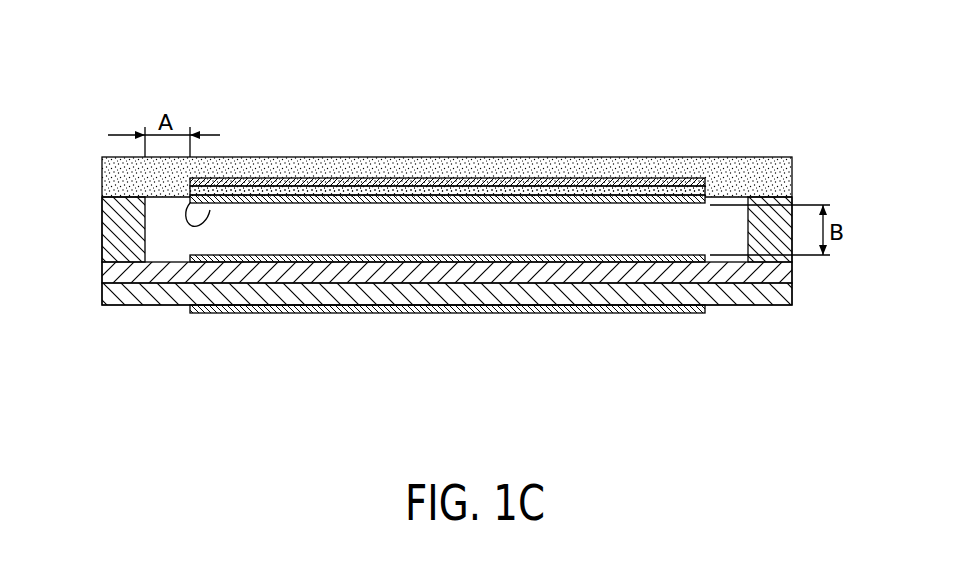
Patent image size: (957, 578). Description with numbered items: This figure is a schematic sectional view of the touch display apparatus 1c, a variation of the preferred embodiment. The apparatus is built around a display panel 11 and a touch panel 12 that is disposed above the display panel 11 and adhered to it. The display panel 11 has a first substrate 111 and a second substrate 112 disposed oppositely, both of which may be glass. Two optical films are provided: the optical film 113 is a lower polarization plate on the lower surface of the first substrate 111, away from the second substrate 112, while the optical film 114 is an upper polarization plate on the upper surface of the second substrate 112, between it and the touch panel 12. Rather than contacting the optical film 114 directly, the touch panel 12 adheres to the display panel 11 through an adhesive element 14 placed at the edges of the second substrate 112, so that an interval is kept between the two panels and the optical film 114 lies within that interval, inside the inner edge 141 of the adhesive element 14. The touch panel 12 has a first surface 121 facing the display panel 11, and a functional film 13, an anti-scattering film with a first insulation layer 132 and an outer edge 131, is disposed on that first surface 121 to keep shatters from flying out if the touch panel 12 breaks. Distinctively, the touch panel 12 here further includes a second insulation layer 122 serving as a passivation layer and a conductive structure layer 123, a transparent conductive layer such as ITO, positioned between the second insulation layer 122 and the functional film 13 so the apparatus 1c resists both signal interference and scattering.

The touch display apparatus 1c is at (242, 82).
The display panel 11 is at (708, 368).
The first substrate 111 is at (568, 272).
The second substrate 112 is at (522, 258).
The optical film 113 is at (621, 293).
The optical film 114 is at (663, 262).
The touch panel 12 is at (458, 156).
The first surface 121 is at (733, 200).
The second insulation layer 122 is at (370, 192).
The conductive structure layer 123 is at (305, 186).
The functional film 13 is at (517, 198).
The outer edge 131 is at (207, 222).
The first insulation layer 132 is at (447, 199).
The adhesive element 14 is at (762, 222).
The inner edge 141 is at (148, 215).